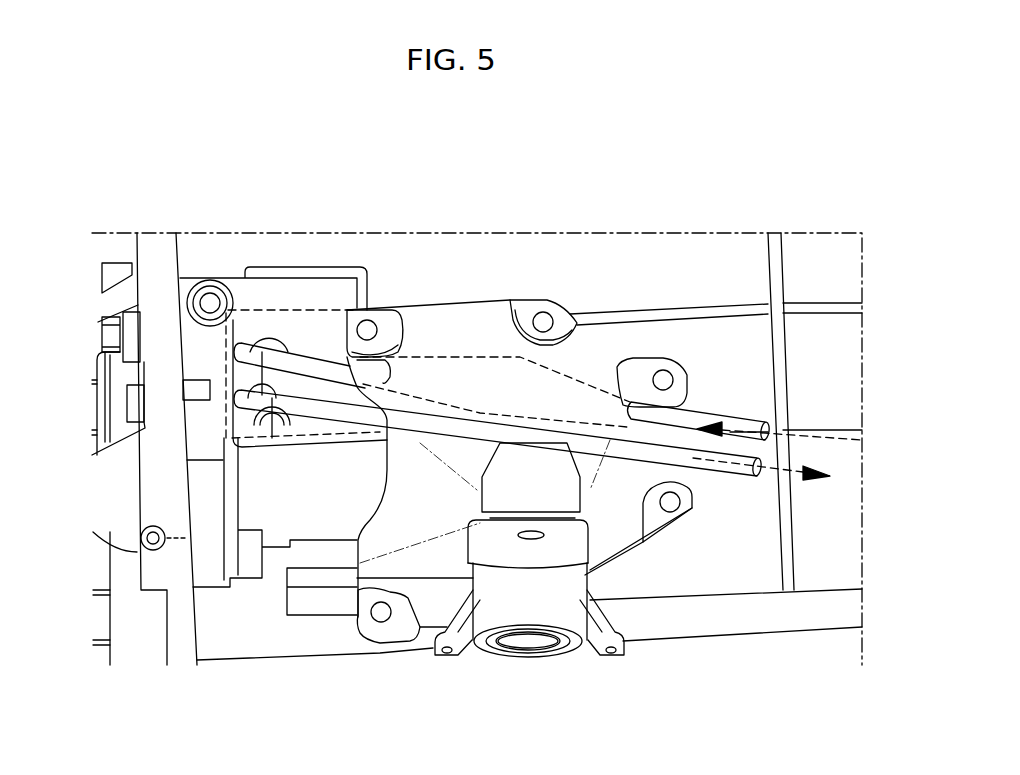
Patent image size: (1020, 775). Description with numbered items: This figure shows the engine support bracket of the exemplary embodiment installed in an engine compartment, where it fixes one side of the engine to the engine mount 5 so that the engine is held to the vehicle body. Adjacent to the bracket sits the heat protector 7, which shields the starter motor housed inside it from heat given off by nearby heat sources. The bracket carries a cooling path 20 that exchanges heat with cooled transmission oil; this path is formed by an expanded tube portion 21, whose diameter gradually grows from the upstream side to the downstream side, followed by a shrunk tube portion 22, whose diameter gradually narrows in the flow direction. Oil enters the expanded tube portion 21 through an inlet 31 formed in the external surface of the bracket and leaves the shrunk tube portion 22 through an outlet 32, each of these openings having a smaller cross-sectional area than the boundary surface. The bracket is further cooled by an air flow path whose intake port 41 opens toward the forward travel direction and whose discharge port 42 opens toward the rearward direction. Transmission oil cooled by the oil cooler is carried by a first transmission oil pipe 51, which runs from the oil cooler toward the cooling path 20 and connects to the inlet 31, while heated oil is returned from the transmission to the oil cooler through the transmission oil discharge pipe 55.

The engine mount 5 is at (692, 418).
The heat protector 7 is at (317, 332).
The cooling path 20 is at (598, 150).
The expanded tube portion 21 is at (577, 403).
The shrunk tube portion 22 is at (460, 380).
The inlet 31 is at (617, 365).
The outlet 32 is at (408, 340).
The intake port 41 is at (700, 455).
The discharge port 42 is at (393, 459).
The first transmission oil pipe 51 is at (268, 353).
The transmission oil discharge pipe 55 is at (272, 445).